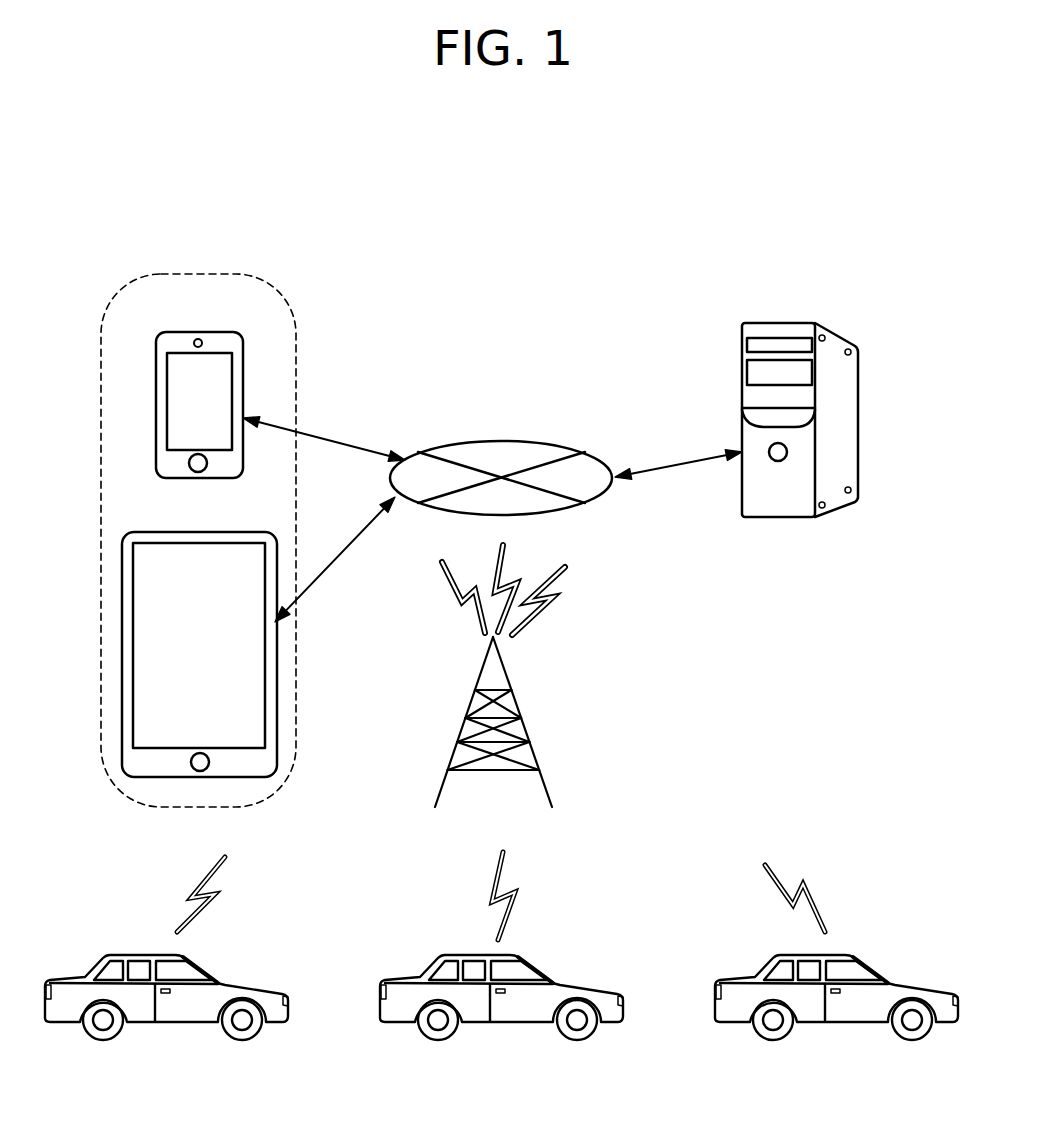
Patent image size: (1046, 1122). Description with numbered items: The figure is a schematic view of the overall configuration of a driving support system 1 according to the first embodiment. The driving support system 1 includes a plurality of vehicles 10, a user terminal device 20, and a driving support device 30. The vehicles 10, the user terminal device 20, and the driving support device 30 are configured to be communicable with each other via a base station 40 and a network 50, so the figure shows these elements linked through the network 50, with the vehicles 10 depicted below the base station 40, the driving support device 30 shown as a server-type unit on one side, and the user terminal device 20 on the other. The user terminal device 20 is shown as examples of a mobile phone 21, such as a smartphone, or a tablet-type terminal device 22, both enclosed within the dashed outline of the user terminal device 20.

The driving support system 1 is at (705, 248).
The vehicle 10 is at (243, 984).
The user terminal device 20 is at (212, 274).
The mobile phone 21 is at (198, 309).
The tablet-type terminal device 22 is at (198, 509).
The driving support device 30 is at (790, 323).
The base station 40 is at (508, 677).
The network 50 is at (507, 440).